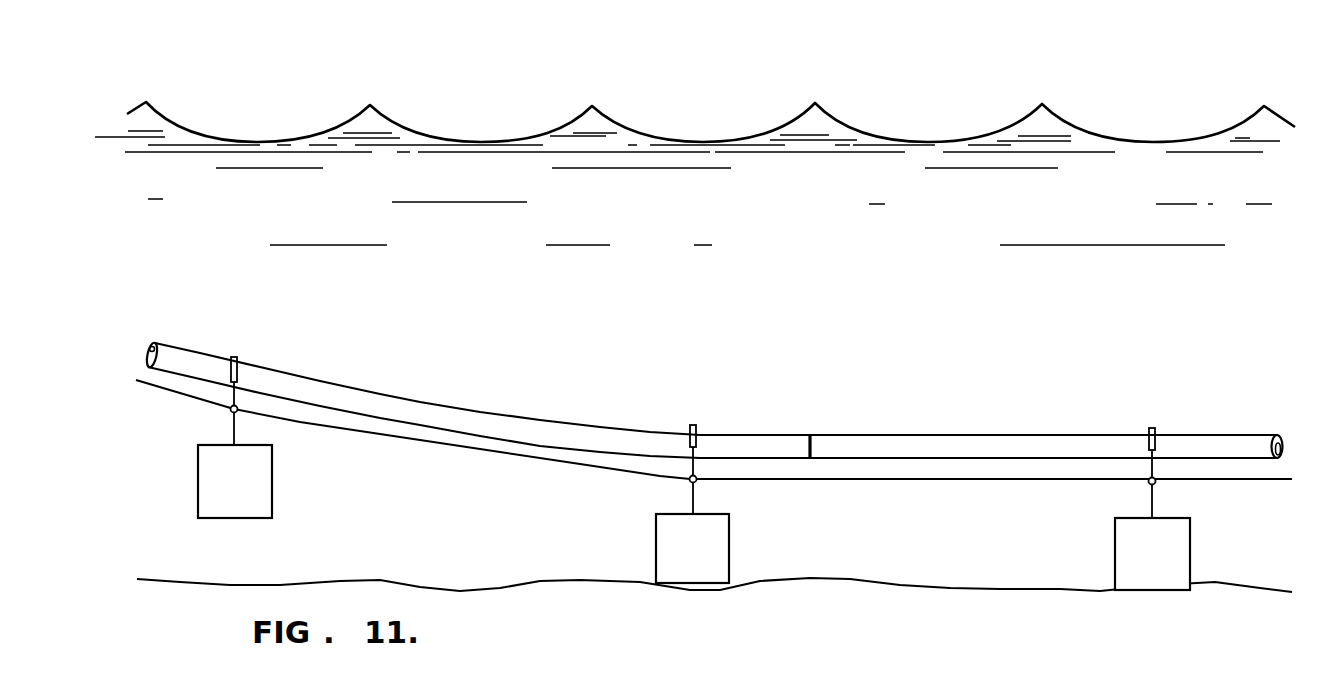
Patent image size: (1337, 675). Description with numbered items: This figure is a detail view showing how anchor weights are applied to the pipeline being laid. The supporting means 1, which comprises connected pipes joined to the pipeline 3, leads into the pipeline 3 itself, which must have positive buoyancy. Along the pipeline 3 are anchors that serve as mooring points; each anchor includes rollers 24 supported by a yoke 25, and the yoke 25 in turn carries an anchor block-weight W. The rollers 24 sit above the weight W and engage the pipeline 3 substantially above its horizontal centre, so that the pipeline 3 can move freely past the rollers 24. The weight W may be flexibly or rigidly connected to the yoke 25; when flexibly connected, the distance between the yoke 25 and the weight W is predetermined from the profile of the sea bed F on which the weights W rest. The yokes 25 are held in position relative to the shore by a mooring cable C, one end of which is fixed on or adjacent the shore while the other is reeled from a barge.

The supporting means 1 is at (272, 371).
The pipeline 3 is at (993, 435).
The rollers 24 is at (698, 425).
The yoke 25 is at (233, 396).
The mooring cable C is at (326, 427).
The anchor block-weight W is at (694, 517).
The sea floor F is at (894, 584).